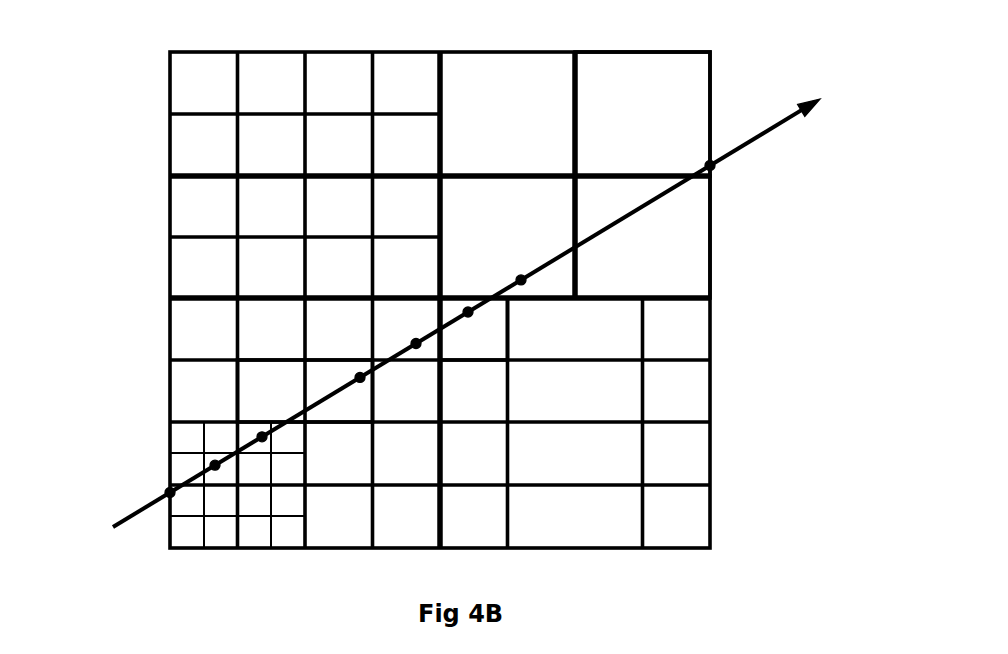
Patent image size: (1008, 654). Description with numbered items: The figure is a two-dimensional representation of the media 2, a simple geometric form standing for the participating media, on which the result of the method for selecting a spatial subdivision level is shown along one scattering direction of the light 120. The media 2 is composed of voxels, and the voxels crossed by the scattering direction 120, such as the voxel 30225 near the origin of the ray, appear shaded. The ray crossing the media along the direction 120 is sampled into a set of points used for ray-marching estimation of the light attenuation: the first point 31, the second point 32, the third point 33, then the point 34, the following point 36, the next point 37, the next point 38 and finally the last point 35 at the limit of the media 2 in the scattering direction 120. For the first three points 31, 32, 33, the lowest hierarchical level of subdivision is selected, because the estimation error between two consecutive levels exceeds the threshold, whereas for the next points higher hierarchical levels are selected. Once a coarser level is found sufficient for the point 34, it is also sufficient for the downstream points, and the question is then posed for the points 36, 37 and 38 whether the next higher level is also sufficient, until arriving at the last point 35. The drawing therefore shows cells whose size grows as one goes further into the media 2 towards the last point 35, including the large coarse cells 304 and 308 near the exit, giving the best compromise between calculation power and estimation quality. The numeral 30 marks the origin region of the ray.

The media 2 is at (382, 288).
The coarse grid cell 304 is at (652, 88).
The coarse grid cell 308 is at (696, 239).
The scattering direction of the light ωout 120 is at (523, 296).
The ray origin 30 is at (106, 470).
The point M0 31 is at (145, 444).
The point M1 32 is at (132, 389).
The point M2 33 is at (195, 385).
The point Mi 34 is at (228, 327).
The point Mm 35 is at (735, 137).
The point Mi+1 36 is at (465, 387).
The point Mi+2 37 is at (621, 364).
The point Mi+3 38 is at (630, 309).
The voxel 30225 is at (119, 537).